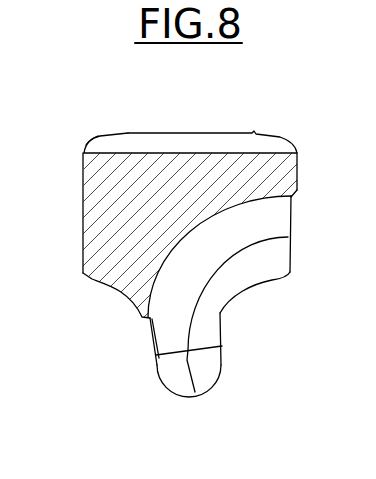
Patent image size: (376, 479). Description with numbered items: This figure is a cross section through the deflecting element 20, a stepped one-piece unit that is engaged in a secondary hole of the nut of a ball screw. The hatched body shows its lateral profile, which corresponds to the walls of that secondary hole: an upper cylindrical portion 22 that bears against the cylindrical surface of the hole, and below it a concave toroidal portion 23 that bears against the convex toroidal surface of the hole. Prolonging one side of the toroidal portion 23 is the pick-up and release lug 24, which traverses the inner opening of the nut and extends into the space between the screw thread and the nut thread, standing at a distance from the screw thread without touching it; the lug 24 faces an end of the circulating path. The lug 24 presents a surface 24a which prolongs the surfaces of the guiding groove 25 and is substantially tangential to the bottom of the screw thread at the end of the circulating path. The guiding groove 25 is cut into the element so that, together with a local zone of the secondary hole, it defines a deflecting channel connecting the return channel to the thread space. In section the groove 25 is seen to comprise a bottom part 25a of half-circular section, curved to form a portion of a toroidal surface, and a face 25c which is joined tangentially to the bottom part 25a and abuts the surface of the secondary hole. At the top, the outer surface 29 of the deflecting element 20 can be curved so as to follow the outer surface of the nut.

The deflecting element 20 is at (80, 128).
The cylindrical portion 22 is at (85, 223).
The concave toroidal portion 23 is at (138, 295).
The pick-up and release lug 24 is at (212, 396).
The surface of lug 24a is at (178, 378).
The guiding groove 25 is at (277, 260).
The bottom part of groove 25a is at (193, 275).
The face of groove 25c is at (243, 275).
The outer surface 29 is at (189, 133).